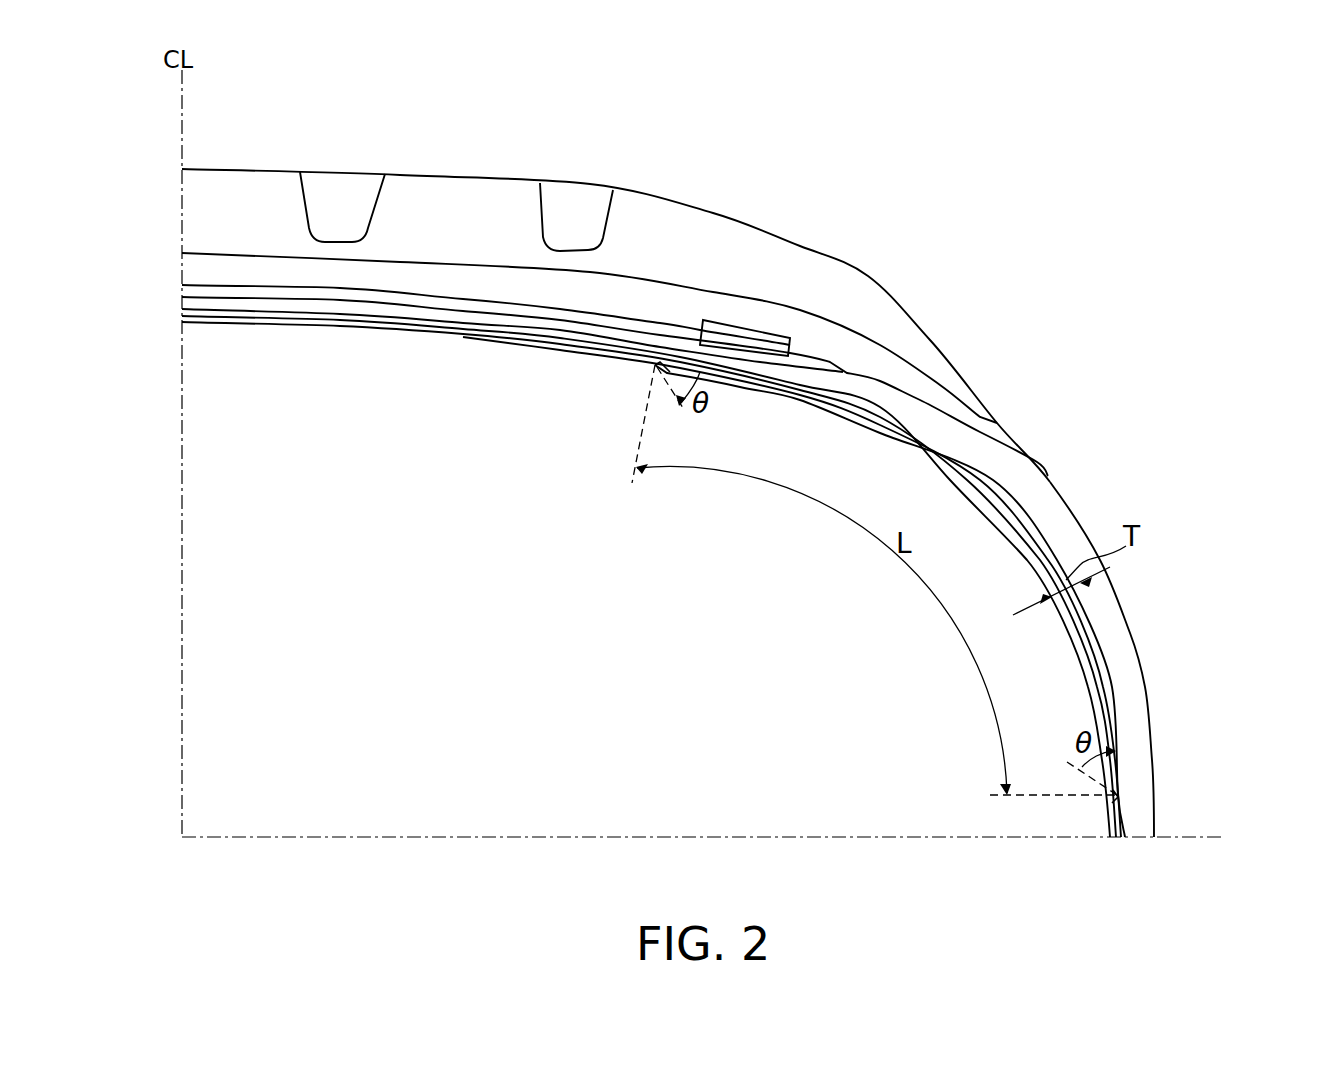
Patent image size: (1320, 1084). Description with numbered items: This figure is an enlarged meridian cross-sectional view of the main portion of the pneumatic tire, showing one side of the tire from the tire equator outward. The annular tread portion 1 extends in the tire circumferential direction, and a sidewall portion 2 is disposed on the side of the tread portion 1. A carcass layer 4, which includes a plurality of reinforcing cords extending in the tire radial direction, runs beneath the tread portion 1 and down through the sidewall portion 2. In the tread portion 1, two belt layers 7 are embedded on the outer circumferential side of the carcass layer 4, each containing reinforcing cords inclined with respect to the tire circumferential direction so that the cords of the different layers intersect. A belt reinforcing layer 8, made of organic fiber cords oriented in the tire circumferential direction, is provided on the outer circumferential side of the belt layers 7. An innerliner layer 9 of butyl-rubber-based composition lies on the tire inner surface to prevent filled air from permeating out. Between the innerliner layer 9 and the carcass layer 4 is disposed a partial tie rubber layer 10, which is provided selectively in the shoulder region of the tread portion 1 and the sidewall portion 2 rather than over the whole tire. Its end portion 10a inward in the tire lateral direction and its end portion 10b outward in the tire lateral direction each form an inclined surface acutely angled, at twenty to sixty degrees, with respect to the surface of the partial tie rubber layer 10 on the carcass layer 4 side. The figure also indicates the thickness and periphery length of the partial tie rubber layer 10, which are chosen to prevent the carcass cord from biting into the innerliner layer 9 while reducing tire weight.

The tread portion 1 is at (245, 158).
The sidewall portion 2 is at (1173, 789).
The carcass layer 4 is at (235, 313).
The belt layer 7 is at (385, 297).
The belt reinforcing layer 8 is at (787, 328).
The innerliner layer 9 is at (463, 337).
The partial tie rubber layer 10 is at (1080, 653).
The end portion inward in the tire lateral direction 10a is at (655, 366).
The end portion outward in the tire lateral direction 10b is at (1115, 797).